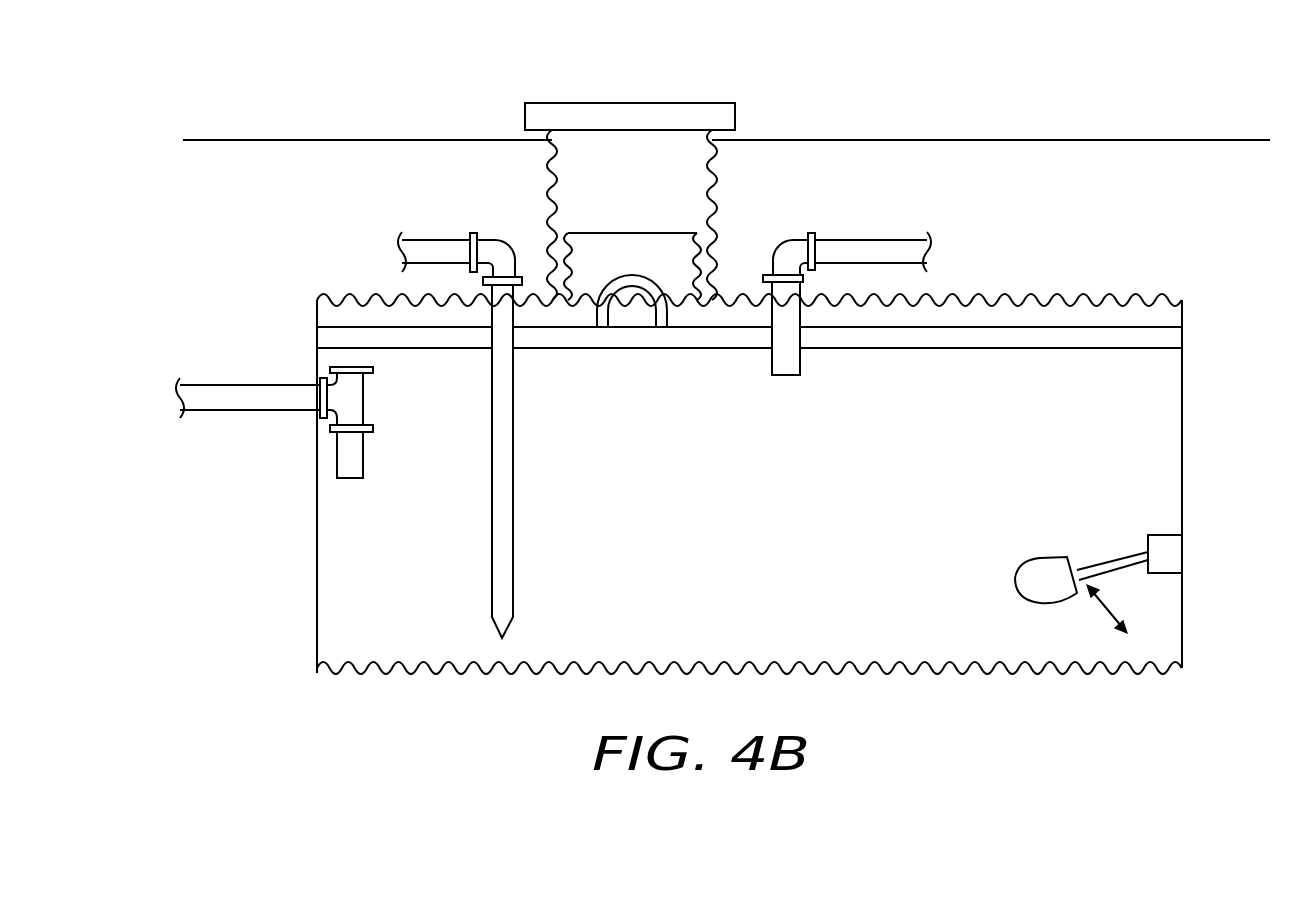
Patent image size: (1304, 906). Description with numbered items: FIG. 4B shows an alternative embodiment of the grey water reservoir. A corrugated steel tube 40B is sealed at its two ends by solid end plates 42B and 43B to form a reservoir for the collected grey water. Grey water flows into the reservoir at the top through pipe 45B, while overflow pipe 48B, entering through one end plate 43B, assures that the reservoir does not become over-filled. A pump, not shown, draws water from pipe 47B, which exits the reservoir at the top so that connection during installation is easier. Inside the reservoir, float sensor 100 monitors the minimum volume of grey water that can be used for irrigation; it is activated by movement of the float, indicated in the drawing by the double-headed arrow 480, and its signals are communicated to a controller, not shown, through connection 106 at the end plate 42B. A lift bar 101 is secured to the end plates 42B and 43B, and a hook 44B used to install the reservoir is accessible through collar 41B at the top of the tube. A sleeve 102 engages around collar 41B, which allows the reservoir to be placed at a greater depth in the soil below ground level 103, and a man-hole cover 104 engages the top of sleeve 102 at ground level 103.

The float sensor 100 is at (1018, 568).
The lift bar 101 is at (1000, 350).
The sleeve 102 is at (713, 202).
The ground level 103 is at (1095, 140).
The man-hole cover 104 is at (668, 103).
The connection 106 is at (1183, 560).
The corrugated steel tube 40B is at (1067, 300).
The collar 41B is at (567, 242).
The end plate 42B is at (1183, 440).
The end plate 43B is at (313, 540).
The hook 44B is at (595, 277).
The pipe 45B is at (828, 234).
The pipe 47B is at (517, 572).
The overflow pipe 48B is at (280, 383).
The sensor swing arrow 480 is at (1105, 618).